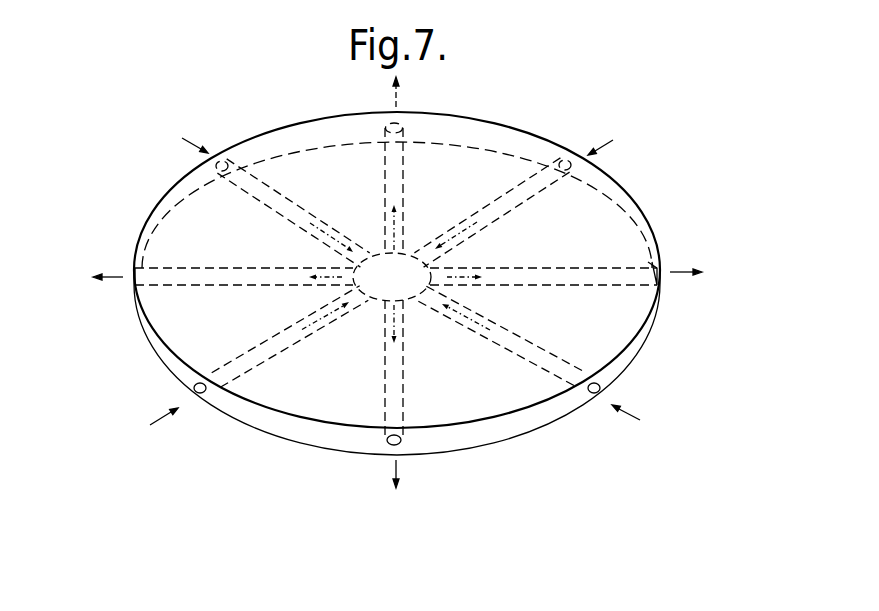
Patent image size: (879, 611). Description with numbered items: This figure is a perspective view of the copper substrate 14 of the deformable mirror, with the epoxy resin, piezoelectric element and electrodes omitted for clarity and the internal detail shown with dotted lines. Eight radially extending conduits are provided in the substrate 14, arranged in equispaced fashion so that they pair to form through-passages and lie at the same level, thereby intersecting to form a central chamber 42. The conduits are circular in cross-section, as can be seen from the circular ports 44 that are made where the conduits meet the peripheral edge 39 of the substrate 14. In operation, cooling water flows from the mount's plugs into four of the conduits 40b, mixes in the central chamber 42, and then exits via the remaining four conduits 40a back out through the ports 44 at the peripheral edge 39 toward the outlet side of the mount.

The copper substrate 14 is at (185, 320).
The peripheral edge 39 is at (513, 423).
The conduits 40a is at (660, 258).
The conduits 40b is at (540, 168).
The central chamber 42 is at (378, 252).
The circular ports 44 is at (194, 387).